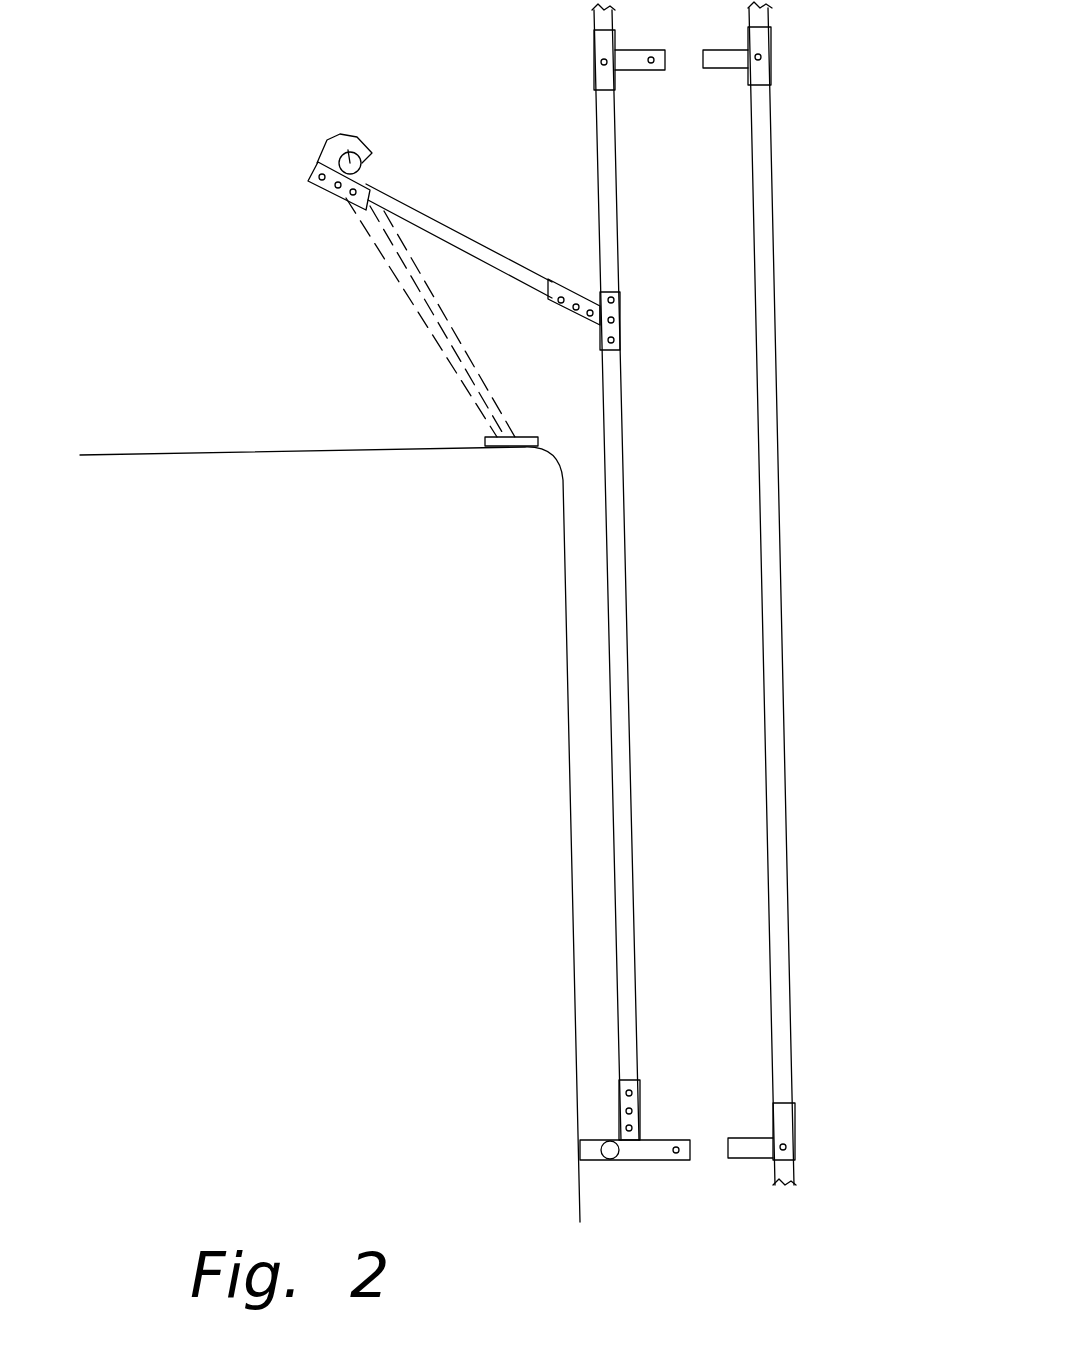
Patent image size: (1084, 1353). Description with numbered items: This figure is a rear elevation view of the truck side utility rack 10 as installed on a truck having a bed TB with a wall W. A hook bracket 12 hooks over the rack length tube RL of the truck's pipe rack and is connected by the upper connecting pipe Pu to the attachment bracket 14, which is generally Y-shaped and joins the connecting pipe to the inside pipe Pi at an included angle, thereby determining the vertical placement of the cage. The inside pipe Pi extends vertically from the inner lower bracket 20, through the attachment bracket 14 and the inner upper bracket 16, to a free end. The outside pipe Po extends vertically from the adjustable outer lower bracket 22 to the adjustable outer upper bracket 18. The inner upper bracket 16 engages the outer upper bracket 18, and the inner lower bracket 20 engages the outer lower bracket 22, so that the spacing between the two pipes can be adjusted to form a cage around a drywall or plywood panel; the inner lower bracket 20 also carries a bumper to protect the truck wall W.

The truck side utility rack 10 is at (840, 130).
The hook bracket 12 is at (331, 128).
The attachment bracket 14 is at (622, 312).
The inner upper bracket 16 is at (593, 62).
The adjustable outer upper bracket 18 is at (773, 50).
The inner lower bracket 20 is at (653, 1160).
The adjustable outer lower bracket 22 is at (797, 1122).